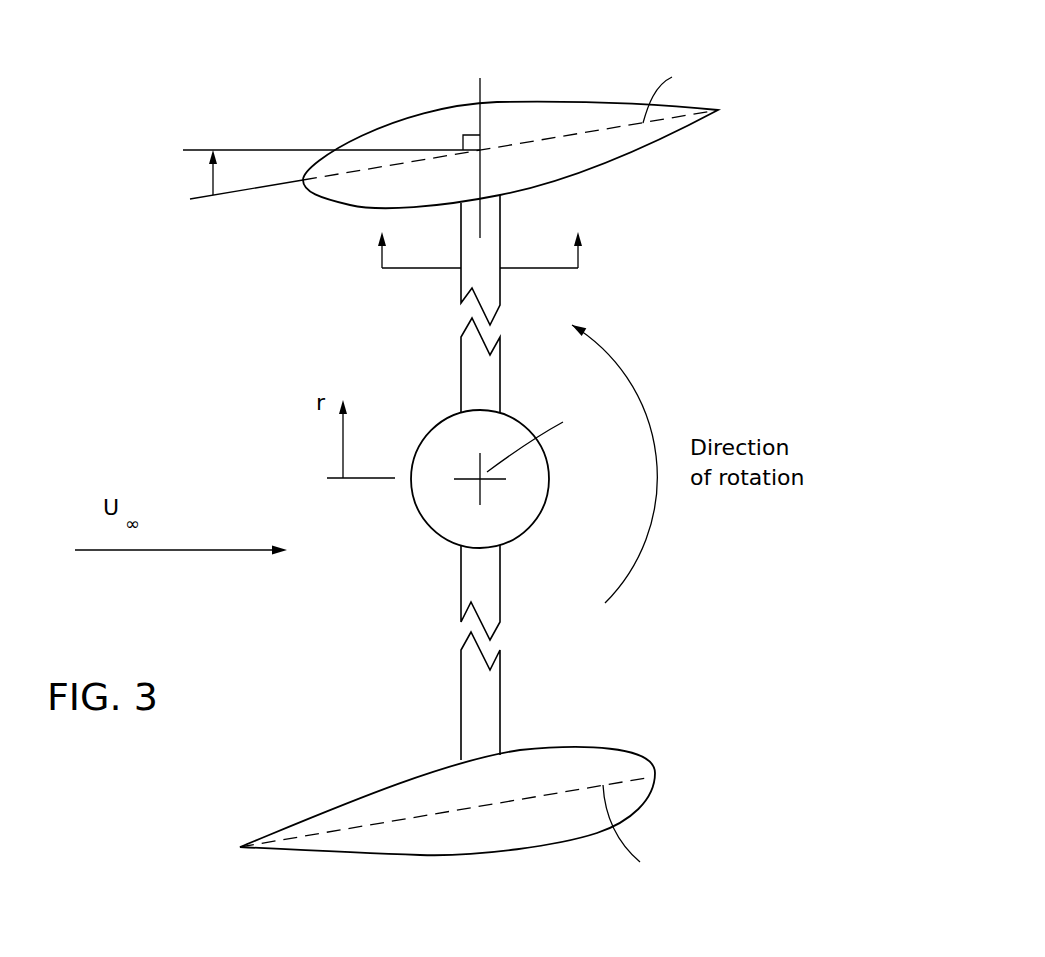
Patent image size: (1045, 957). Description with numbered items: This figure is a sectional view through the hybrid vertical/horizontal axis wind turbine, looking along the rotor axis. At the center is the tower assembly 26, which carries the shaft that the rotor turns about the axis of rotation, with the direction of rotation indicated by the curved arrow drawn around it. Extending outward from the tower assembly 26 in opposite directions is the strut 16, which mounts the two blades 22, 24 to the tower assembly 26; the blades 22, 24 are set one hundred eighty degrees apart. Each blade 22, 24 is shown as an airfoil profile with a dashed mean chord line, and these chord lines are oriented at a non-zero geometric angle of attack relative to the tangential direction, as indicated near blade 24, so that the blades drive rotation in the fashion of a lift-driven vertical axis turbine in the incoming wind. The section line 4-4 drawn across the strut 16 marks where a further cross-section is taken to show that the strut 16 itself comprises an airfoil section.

The section line 4- 4 is at (479, 253).
The strut 16 is at (483, 705).
The blade 22 is at (462, 840).
The blade 24 is at (615, 142).
The tower assembly 26 is at (542, 495).